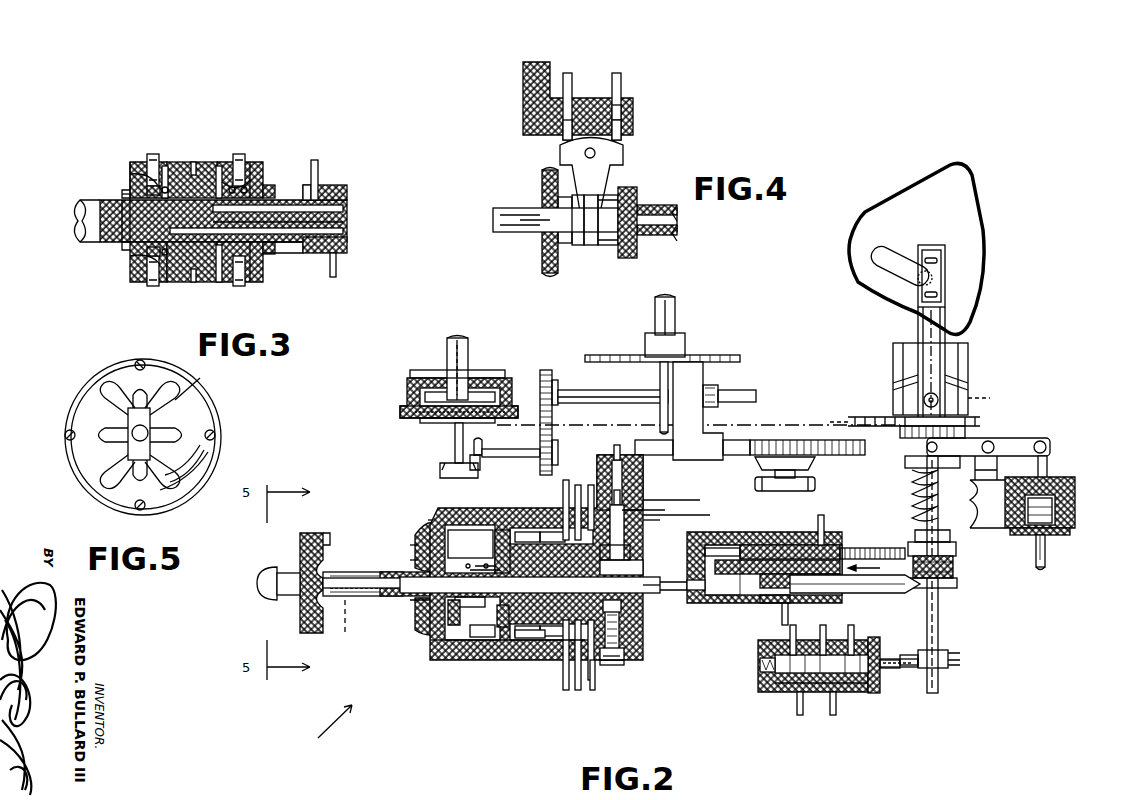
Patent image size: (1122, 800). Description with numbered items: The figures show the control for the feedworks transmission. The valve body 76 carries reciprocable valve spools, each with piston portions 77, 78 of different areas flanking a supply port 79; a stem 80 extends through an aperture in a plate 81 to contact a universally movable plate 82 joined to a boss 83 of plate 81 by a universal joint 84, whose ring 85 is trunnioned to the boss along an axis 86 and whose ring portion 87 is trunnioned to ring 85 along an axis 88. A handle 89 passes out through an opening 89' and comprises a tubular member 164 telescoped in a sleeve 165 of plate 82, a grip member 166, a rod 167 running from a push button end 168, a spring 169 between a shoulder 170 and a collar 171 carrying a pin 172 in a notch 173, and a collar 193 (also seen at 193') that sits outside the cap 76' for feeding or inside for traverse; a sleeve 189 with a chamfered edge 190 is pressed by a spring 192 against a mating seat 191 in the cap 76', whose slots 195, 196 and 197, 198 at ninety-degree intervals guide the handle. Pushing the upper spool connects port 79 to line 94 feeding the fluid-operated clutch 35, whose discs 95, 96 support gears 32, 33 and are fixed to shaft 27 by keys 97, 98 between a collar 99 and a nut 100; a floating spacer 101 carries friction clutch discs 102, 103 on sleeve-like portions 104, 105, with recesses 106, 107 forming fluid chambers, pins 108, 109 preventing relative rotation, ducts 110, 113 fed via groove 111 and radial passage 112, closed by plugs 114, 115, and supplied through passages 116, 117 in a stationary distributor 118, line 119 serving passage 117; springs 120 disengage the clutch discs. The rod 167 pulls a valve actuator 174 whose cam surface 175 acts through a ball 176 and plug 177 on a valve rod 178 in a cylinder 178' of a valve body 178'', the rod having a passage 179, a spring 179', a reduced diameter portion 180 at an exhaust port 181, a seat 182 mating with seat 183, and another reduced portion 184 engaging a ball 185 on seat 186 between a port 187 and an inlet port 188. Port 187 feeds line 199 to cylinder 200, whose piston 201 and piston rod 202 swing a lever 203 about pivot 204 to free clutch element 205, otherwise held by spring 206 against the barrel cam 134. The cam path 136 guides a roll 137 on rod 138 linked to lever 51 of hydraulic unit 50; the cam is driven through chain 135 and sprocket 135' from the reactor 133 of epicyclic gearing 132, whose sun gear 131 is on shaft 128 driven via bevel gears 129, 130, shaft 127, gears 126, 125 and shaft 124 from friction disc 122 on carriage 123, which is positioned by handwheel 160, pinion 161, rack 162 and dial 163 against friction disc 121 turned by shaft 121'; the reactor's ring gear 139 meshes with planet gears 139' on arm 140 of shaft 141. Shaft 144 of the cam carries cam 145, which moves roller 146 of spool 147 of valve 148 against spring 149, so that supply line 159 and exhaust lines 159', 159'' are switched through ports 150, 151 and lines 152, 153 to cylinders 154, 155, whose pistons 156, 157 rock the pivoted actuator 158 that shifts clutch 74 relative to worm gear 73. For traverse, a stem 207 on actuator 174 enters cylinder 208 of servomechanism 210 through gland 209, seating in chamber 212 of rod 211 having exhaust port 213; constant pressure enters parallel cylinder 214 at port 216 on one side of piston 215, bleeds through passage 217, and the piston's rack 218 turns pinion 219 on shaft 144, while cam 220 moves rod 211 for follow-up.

In FIG. 3, the shaft 27 is at (85, 212).
In FIG. 3, the gear 32 is at (154, 154).
In FIG. 3, the gear 33 is at (241, 154).
In FIG. 3, the fluid-operated clutch 35 is at (150, 117).
In FIG. 3, the line 94 is at (315, 160).
In FIG. 2, the line 94 is at (588, 492).
In FIG. 3, the disc 95 is at (140, 164).
In FIG. 3, the disc 96 is at (258, 162).
In FIG. 3, the key 97 is at (130, 252).
In FIG. 3, the key 98 is at (256, 283).
In FIG. 3, the collar 99 is at (122, 195).
In FIG. 3, the nut 100 is at (272, 258).
In FIG. 3, the spacer 101 is at (195, 162).
In FIG. 3, the friction clutch disc 102 is at (178, 286).
In FIG. 3, the friction clutch disc 103 is at (214, 286).
In FIG. 3, the sleeve-like portion 104 is at (140, 185).
In FIG. 3, the sleeve-like portion 105 is at (262, 182).
In FIG. 3, the recess 106 is at (166, 164).
In FIG. 3, the recess 107 is at (219, 164).
In FIG. 3, the pins 108 is at (150, 288).
In FIG. 3, the pins 109 is at (238, 288).
In FIG. 3, the duct 110 is at (300, 246).
In FIG. 3, the groove 111 is at (130, 258).
In FIG. 3, the radial passage 112 is at (145, 257).
In FIG. 3, the duct 113 is at (292, 200).
In FIG. 3, the plug 114 is at (345, 207).
In FIG. 3, the plug 115 is at (345, 231).
In FIG. 3, the radial passage 116 is at (320, 190).
In FIG. 3, the radial passage 117 is at (348, 250).
In FIG. 3, the stationary distributor 118 is at (348, 188).
In FIG. 3, the line 119 is at (337, 270).
In FIG. 2, the line 119 is at (594, 690).
In FIG. 3, the springs 120 is at (130, 170).
In FIG. 4, the line 152 is at (620, 78).
In FIG. 4, the line 153 is at (569, 78).
In FIG. 4, the cylinder 154 is at (622, 111).
In FIG. 4, the cylinder 155 is at (540, 110).
In FIG. 4, the piston 156 is at (622, 138).
In FIG. 4, the piston 157 is at (565, 138).
In FIG. 4, the pivoted actuator 158 is at (600, 178).
In FIG. 4, the worm gear 73 is at (545, 270).
In FIG. 4, the clutch element 74 is at (606, 250).
In FIG. 5, the cap 76' is at (134, 437).
In FIG. 2, the cap 76' is at (428, 676).
In FIG. 5, the handle 89 is at (140, 435).
In FIG. 2, the handle 89 is at (322, 728).
In FIG. 5, the grip member 166 is at (128, 418).
In FIG. 2, the grip member 166 is at (315, 535).
In FIG. 5, the slot 195 is at (146, 390).
In FIG. 2, the slot 195 is at (412, 540).
In FIG. 5, the spring finger 197 is at (136, 476).
In FIG. 5, the spring finger 198 is at (104, 440).
In FIG. 5, the push button end 168 is at (112, 466).
In FIG. 2, the push button end 168 is at (278, 568).
In FIG. 5, the cam surface 193' is at (200, 385).
In FIG. 2, the cam surface 193' is at (388, 534).
In FIG. 5, the slot 196 is at (178, 426).
In FIG. 2, the epicyclic gearing arrangement 132 is at (390, 352).
In FIG. 2, the reactor 133 is at (407, 385).
In FIG. 2, the arm 140 is at (480, 395).
In FIG. 2, the shaft 141 is at (456, 338).
In FIG. 2, the sun gear 131 is at (447, 358).
In FIG. 2, the internal ring gear 139 is at (439, 406).
In FIG. 2, the planet gears 139' is at (442, 399).
In FIG. 2, the shaft 128 is at (455, 438).
In FIG. 2, the bevel gear 130 is at (440, 466).
In FIG. 2, the bevel gear 129 is at (480, 462).
In FIG. 2, the shaft 127 is at (496, 430).
In FIG. 2, the gear 126 is at (540, 445).
In FIG. 2, the gear 125 is at (550, 370).
In FIG. 2, the shaft 124 is at (598, 392).
In FIG. 2, the shaft 121' is at (648, 326).
In FIG. 2, the friction disc 121 is at (662, 347).
In FIG. 2, the friction disc 122 is at (660, 383).
In FIG. 2, the carriage 123 is at (715, 450).
In FIG. 2, the pinion 161 is at (795, 440).
In FIG. 2, the rack 162 is at (866, 445).
In FIG. 2, the dial 163 is at (755, 465).
In FIG. 2, the handwheel 160 is at (816, 483).
In FIG. 2, the chain 135 is at (902, 408).
In FIG. 2, the hydraulic unit 50 is at (903, 200).
In FIG. 2, the lever 51 is at (900, 255).
In FIG. 2, the rod 138 is at (920, 330).
In FIG. 2, the barrel cam 134 is at (900, 352).
In FIG. 2, the cam path 136 is at (900, 380).
In FIG. 2, the roll 137 is at (992, 397).
In FIG. 2, the sprocket 135' is at (962, 425).
In FIG. 2, the lever 203 is at (1028, 438).
In FIG. 2, the pivot 204 is at (990, 452).
In FIG. 2, the piston rod 202 is at (1050, 462).
In FIG. 2, the cylinder 200 is at (1060, 477).
In FIG. 2, the piston 201 is at (1048, 535).
In FIG. 2, the line 199 is at (1038, 552).
In FIG. 2, the shaft 144 is at (938, 618).
In FIG. 2, the clutch element 205 is at (910, 468).
In FIG. 2, the spring 206 is at (912, 508).
In FIG. 2, the pinion 219 is at (940, 560).
In FIG. 2, the cam 220 is at (935, 586).
In FIG. 2, the cam 145 is at (962, 660).
In FIG. 2, the roller 146 is at (905, 670).
In FIG. 2, the cylinder 208 is at (842, 534).
In FIG. 2, the piston 215 is at (768, 545).
In FIG. 2, the small passage 217 is at (738, 545).
In FIG. 2, the cylinder 214 is at (808, 545).
In FIG. 2, the port 216 is at (826, 520).
In FIG. 2, the rack 218 is at (890, 548).
In FIG. 2, the servomechanism 210 is at (878, 568).
In FIG. 2, the rod 211 is at (860, 586).
In FIG. 2, the chamber 212 is at (782, 618).
In FIG. 2, the stem 207 is at (770, 603).
In FIG. 2, the exhaust port 213 is at (770, 605).
In FIG. 2, the gland 209 is at (716, 605).
In FIG. 2, the ball 176 is at (692, 603).
In FIG. 2, the spool 147 is at (882, 643).
In FIG. 2, the valve 148 is at (858, 693).
In FIG. 2, the spring 149 is at (772, 675).
In FIG. 2, the exhaust line 159' is at (811, 630).
In FIG. 2, the supply line 159 is at (858, 626).
In FIG. 2, the exhaust line 159'' is at (873, 633).
In FIG. 2, the port 151 is at (798, 712).
In FIG. 2, the port 150 is at (834, 715).
In FIG. 2, the shoulder 170 is at (300, 606).
In FIG. 2, the spring 169 is at (352, 572).
In FIG. 2, the rod 167 is at (340, 572).
In FIG. 2, the pin 172 is at (392, 572).
In FIG. 2, the collar 171 is at (362, 596).
In FIG. 2, the notch 173 is at (332, 621).
In FIG. 2, the tubular member 164 is at (388, 598).
In FIG. 2, the opening 89' is at (400, 553).
In FIG. 2, the chamfered edge 190 is at (425, 520).
In FIG. 2, the sleeve 189 is at (424, 632).
In FIG. 2, the collar 193 is at (431, 497).
In FIG. 2, the mating seat 191 is at (422, 605).
In FIG. 2, the sleeve 165 is at (428, 606).
In FIG. 2, the valve body 76 is at (530, 572).
In FIG. 2, the axis 86 is at (530, 585).
In FIG. 2, the universally movable plate 82 is at (478, 530).
In FIG. 2, the universal joint 84 is at (470, 540).
In FIG. 2, the spring 192 is at (478, 562).
In FIG. 2, the stem 80 is at (505, 530).
In FIG. 2, the piston portion 78 is at (525, 532).
In FIG. 2, the piston portion 77 is at (552, 532).
In FIG. 2, the port 79 is at (562, 488).
In FIG. 2, the plate 81 is at (535, 660).
In FIG. 2, the boss 83 is at (470, 609).
In FIG. 2, the ring 85 is at (451, 617).
In FIG. 2, the axis 88 is at (484, 633).
In FIG. 2, the ring portion 87 is at (495, 662).
In FIG. 2, the mating seat 183 is at (604, 490).
In FIG. 2, the seat 186 is at (602, 462).
In FIG. 2, the constant pressure fluid inlet port 188 is at (620, 455).
In FIG. 2, the ball 185 is at (622, 490).
In FIG. 2, the plunger 184 is at (624, 500).
In FIG. 2, the port 187 is at (665, 508).
In FIG. 2, the seat 182 is at (648, 505).
In FIG. 2, the reduced diameter portion 180 is at (648, 517).
In FIG. 2, the exhaust port 181 is at (660, 522).
In FIG. 2, the valve actuator 174 is at (630, 575).
In FIG. 2, the passage 179 is at (638, 551).
In FIG. 2, the cam surface 175 is at (630, 588).
In FIG. 2, the valve rod 178 is at (640, 632).
In FIG. 2, the plug 177 is at (622, 622).
In FIG. 2, the cylinder 178' is at (657, 656).
In FIG. 2, the valve body 178'' is at (643, 669).
In FIG. 2, the spring 179' is at (621, 673).